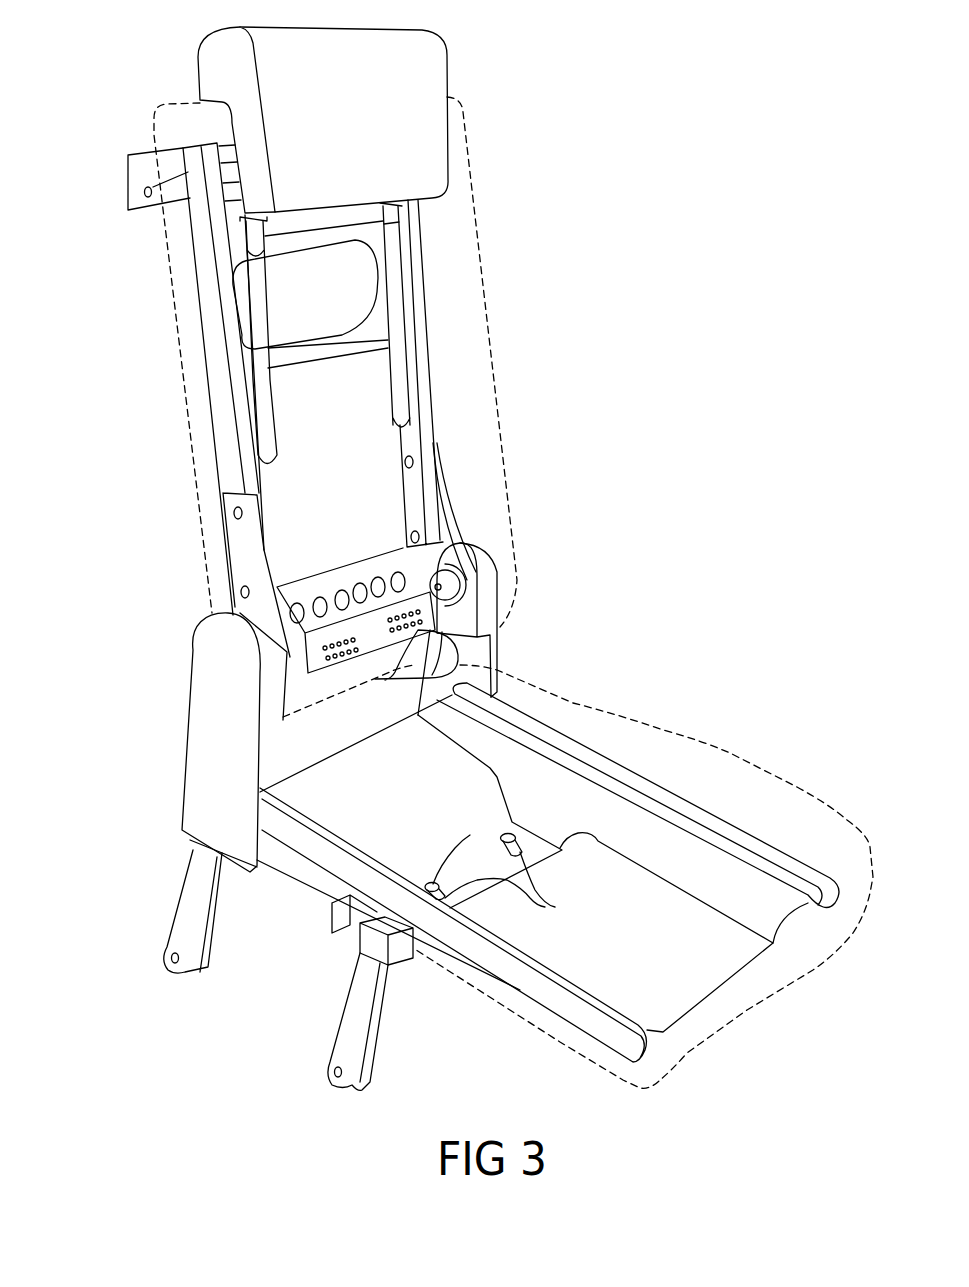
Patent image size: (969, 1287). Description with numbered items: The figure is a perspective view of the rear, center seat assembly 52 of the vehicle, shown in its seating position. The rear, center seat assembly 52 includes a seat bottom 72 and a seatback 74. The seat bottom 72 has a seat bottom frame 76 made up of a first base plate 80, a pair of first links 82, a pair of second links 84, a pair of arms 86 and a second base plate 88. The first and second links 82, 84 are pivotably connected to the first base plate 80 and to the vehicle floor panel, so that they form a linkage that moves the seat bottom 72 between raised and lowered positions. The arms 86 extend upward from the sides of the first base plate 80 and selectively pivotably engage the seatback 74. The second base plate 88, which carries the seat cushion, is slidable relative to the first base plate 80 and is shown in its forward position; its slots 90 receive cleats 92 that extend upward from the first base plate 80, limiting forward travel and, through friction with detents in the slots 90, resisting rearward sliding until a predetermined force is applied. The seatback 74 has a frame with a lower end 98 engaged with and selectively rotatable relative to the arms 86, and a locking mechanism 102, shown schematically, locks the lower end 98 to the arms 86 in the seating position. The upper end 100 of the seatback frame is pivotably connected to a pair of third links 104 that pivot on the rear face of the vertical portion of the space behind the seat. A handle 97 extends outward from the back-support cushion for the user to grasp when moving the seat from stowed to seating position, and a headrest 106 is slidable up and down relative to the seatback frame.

The rear, center seat assembly 52 is at (560, 236).
The seat bottom 72 is at (740, 750).
The seatback 74 is at (500, 362).
The seat bottom frame 76 is at (403, 977).
The first base plate 80 is at (317, 910).
The first links 82 is at (200, 890).
The second links 84 is at (357, 1053).
The arms 86 is at (218, 756).
The second base plate 88 is at (687, 980).
The slots 90 is at (507, 878).
The cleats 92 is at (503, 836).
The handle 97 is at (407, 672).
The lower end 98 is at (447, 558).
The upper end 100 is at (198, 216).
The locking mechanism 102 is at (453, 593).
The third links 104 is at (173, 183).
The headrest 106 is at (355, 58).